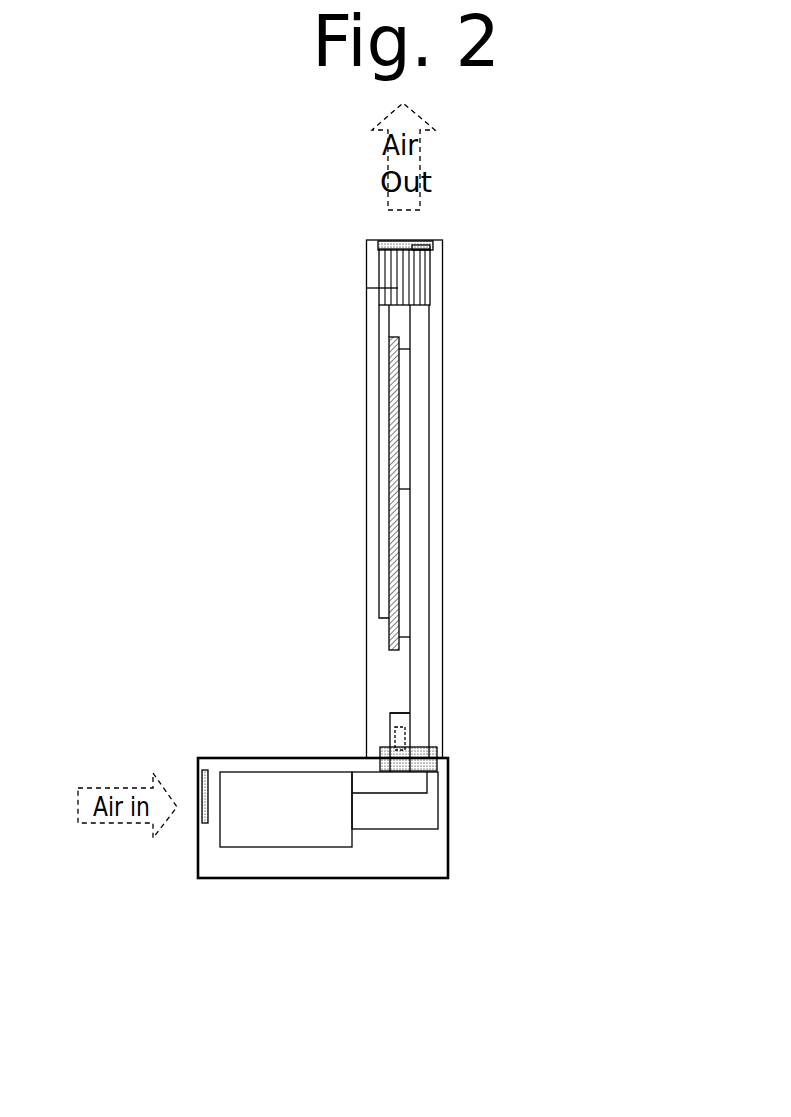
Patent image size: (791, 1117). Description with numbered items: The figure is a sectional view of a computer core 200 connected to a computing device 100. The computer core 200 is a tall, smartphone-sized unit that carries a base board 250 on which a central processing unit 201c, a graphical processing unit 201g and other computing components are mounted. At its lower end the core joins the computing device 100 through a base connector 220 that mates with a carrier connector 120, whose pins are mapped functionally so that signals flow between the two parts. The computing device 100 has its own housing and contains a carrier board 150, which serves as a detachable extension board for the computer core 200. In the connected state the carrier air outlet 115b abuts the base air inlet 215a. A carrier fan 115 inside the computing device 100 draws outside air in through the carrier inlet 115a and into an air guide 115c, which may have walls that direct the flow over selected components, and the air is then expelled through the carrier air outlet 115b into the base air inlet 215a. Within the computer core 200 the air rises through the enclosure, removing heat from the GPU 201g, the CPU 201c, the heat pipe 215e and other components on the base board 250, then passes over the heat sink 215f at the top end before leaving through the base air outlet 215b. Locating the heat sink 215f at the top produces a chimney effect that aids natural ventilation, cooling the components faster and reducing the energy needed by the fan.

The computing device 100 is at (323, 906).
The carrier fan 115 is at (319, 860).
The carrier inlet 115a is at (174, 890).
The carrier air outlet 115b is at (485, 796).
The air guide 115c is at (463, 818).
The carrier connector 120 is at (316, 739).
The carrier board 150 is at (235, 865).
The computer core 200 is at (313, 499).
The central processing unit 201c is at (486, 531).
The graphical processing unit 201g is at (492, 531).
The base air inlet 215a is at (481, 730).
The base air outlet 215b is at (352, 241).
The heat pipe 215e is at (481, 294).
The heat sink 215f is at (326, 325).
The base connector 220 is at (327, 675).
The base board 250 is at (498, 477).